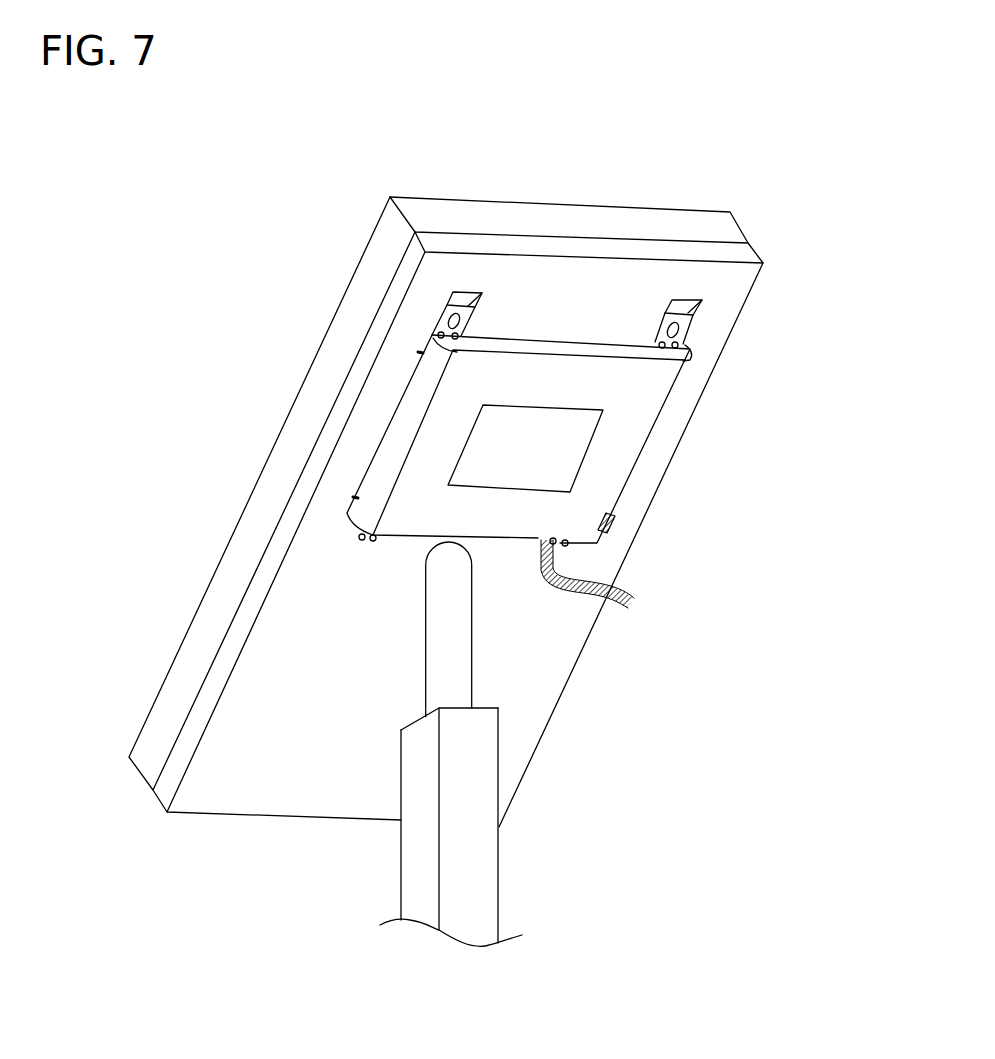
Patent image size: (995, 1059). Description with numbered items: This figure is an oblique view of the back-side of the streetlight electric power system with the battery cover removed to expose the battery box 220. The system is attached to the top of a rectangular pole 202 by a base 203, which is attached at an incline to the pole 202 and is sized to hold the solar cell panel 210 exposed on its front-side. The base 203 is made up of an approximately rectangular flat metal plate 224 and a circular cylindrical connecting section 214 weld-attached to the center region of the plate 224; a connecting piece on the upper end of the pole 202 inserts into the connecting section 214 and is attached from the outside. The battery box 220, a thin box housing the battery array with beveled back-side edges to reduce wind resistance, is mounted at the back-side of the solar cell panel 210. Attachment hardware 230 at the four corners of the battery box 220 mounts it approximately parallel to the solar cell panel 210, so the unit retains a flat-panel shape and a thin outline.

The pole 202 is at (522, 827).
The base 203 is at (450, 512).
The solar cell panel 210 is at (173, 547).
The circular cylindrical connecting section 214 is at (453, 622).
The battery box 220 is at (615, 447).
The plate 224 is at (515, 745).
The attachment hardware 230 is at (428, 313).